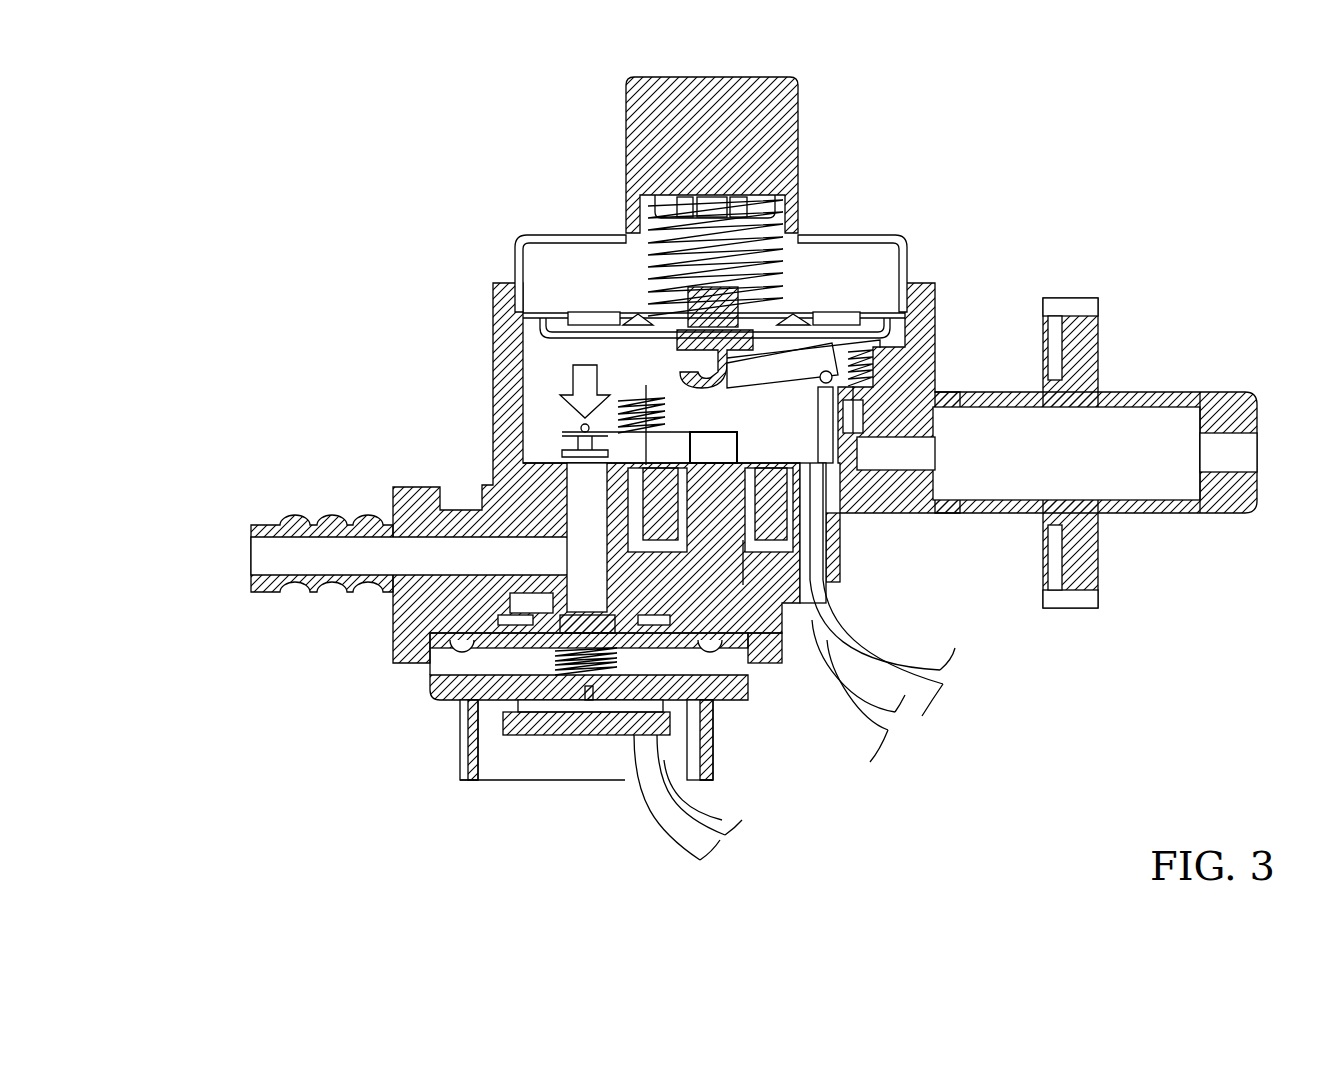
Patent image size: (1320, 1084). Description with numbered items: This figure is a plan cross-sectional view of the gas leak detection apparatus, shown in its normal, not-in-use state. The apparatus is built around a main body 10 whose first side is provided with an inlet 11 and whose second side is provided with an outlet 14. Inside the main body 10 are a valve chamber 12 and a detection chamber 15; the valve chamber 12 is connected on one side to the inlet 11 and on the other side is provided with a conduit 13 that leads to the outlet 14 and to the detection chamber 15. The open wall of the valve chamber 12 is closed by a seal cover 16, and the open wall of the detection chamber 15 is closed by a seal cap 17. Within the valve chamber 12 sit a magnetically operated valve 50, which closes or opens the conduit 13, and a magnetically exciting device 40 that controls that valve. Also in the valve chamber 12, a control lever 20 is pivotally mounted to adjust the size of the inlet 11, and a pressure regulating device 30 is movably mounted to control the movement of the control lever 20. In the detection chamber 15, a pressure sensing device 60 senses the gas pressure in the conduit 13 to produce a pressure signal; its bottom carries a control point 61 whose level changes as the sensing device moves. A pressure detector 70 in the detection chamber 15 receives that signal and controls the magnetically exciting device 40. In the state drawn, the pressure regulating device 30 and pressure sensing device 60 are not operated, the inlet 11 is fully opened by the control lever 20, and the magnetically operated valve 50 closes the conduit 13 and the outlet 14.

The main body 10 is at (493, 407).
The inlet 11 is at (893, 452).
The valve chamber 12 is at (550, 357).
The conduit 13 is at (580, 520).
The outlet 14 is at (272, 558).
The detection chamber 15 is at (458, 705).
The seal cover 16 is at (800, 148).
The seal cap 17 is at (745, 695).
The control lever 20 is at (820, 350).
The pressure regulating device 30 is at (613, 307).
The magnetically exciting device 40 is at (787, 517).
The magnetically operated valve 50 is at (568, 415).
The pressure sensing device 60 is at (448, 657).
The control point 61 is at (580, 670).
The pressure detector 70 is at (605, 740).